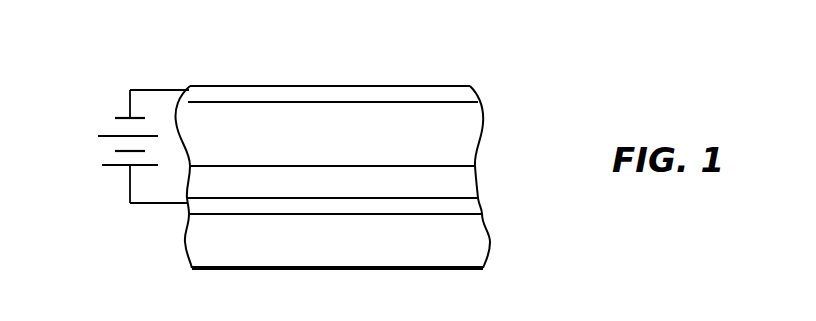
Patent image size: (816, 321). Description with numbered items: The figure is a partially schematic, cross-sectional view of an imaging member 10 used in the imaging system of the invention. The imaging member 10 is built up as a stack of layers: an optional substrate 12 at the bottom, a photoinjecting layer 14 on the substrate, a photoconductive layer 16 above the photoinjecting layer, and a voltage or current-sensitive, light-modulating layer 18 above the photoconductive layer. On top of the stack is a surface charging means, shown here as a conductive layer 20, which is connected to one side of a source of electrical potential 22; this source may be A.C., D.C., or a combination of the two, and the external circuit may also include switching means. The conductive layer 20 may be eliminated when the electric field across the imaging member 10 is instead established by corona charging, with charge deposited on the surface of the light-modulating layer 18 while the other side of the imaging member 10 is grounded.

The imaging member 10 is at (390, 284).
The substrate 12 is at (478, 256).
The photoinjecting layer 14 is at (474, 214).
The photoconductive layer 16 is at (470, 191).
The light-modulating layer 18 is at (463, 151).
The conductive layer 20 is at (471, 97).
The source of electrical potential 22 is at (98, 136).